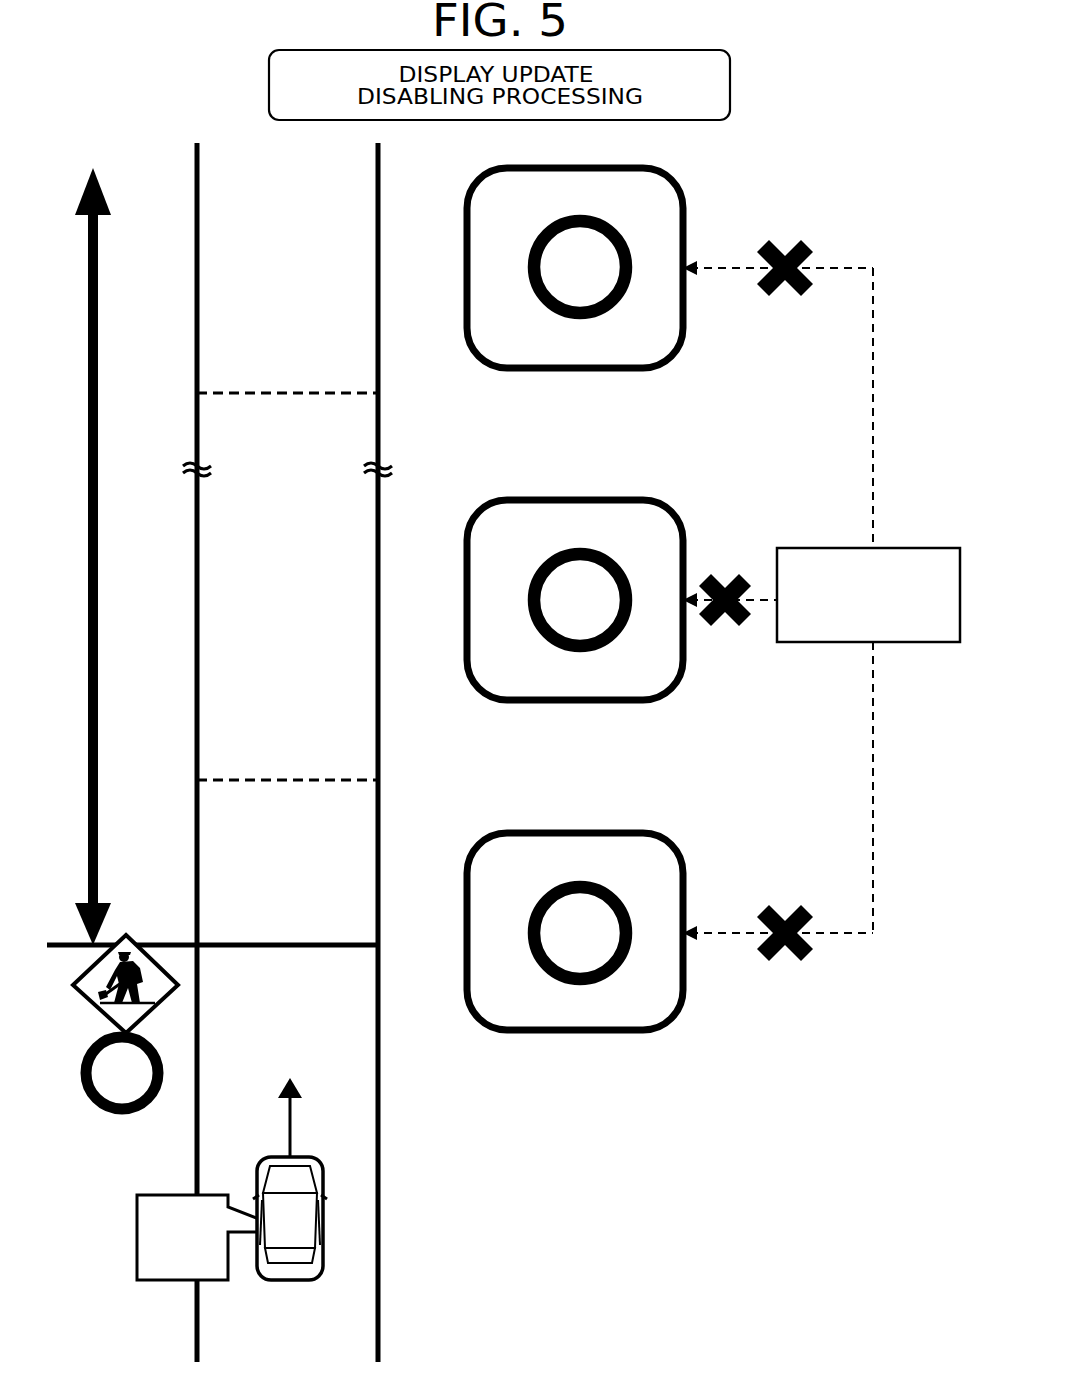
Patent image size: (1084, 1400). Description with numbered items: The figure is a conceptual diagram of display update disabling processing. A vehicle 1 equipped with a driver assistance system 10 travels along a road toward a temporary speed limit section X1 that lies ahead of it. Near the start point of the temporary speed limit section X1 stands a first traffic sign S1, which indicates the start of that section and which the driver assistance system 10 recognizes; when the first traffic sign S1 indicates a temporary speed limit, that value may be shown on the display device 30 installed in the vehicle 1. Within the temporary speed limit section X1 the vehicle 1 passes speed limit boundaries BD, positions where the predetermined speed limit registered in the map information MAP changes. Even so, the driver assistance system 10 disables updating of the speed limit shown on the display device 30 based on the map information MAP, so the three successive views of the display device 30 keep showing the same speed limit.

The display device 30 is at (556, 168).
The map information MAP is at (818, 548).
The speed limit boundary BD is at (255, 589).
The temporary speed limit section X1 is at (78, 556).
The first traffic sign S1 is at (101, 1018).
The driver assistance system 10 is at (214, 1237).
The vehicle 1 is at (290, 1282).